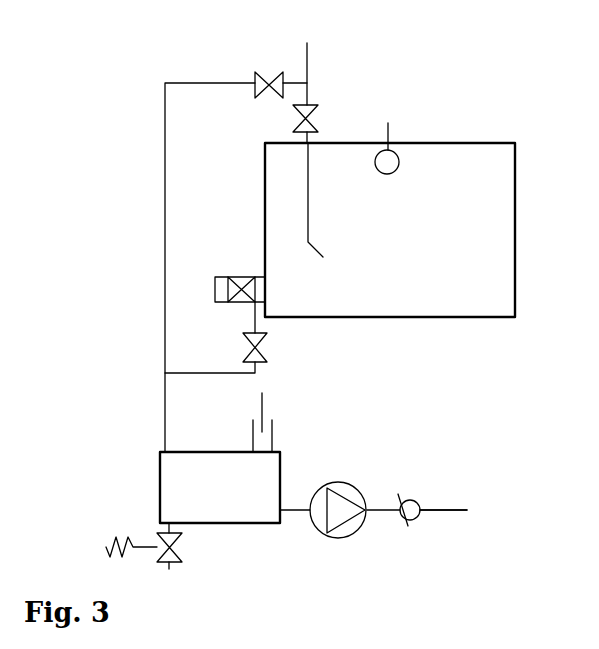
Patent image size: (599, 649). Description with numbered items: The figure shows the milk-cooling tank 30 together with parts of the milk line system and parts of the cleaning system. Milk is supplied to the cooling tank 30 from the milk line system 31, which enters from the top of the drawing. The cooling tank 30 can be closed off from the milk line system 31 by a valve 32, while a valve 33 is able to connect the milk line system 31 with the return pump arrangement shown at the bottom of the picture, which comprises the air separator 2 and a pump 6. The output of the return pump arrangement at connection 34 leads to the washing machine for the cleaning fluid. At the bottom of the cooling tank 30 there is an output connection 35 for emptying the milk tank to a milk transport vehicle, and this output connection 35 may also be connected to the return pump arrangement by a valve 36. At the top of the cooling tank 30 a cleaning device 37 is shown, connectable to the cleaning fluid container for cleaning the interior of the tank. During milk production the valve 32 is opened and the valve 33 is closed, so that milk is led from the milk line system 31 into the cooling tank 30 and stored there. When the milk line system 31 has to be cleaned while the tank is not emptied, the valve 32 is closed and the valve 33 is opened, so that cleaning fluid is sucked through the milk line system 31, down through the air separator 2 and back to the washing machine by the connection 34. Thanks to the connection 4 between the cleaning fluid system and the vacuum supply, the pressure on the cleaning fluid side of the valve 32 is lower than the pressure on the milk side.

The air separator 2 is at (221, 495).
The connection between the cleaning fluid system and the vacuum supply 4 is at (264, 396).
The pump 6 is at (352, 492).
The milk-cooling tank 30 is at (408, 244).
The milk line system 31 is at (312, 61).
The valve 32 is at (316, 102).
The valve 33 is at (268, 77).
The output of the return pump arrangement 34 is at (460, 511).
The output connection 35 is at (231, 276).
The valve 36 is at (248, 350).
The cleaning device 37 is at (393, 164).